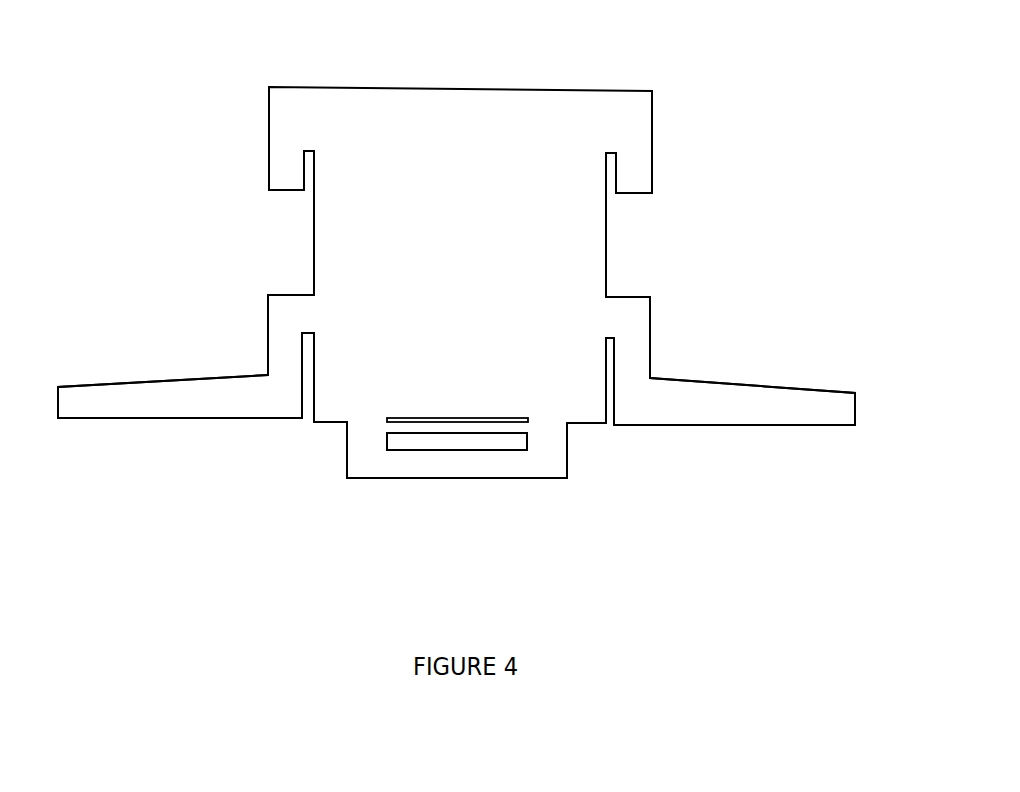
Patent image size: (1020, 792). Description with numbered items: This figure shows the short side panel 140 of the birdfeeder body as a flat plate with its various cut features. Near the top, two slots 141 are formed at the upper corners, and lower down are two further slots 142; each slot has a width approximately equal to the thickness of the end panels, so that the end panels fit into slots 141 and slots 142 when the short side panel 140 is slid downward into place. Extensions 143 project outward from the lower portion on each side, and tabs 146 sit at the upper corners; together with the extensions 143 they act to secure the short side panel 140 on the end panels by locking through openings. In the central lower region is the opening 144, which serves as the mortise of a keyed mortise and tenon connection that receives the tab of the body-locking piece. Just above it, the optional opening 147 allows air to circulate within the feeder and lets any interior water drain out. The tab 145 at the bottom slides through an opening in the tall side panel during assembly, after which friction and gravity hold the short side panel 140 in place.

The short side panel 140 is at (529, 90).
The slots 141 is at (310, 163).
The slots 142 is at (303, 375).
The extensions 143 is at (207, 408).
The opening 144 is at (422, 438).
The tab 145 is at (392, 473).
The tabs 146 is at (288, 168).
The opening 147 is at (408, 418).